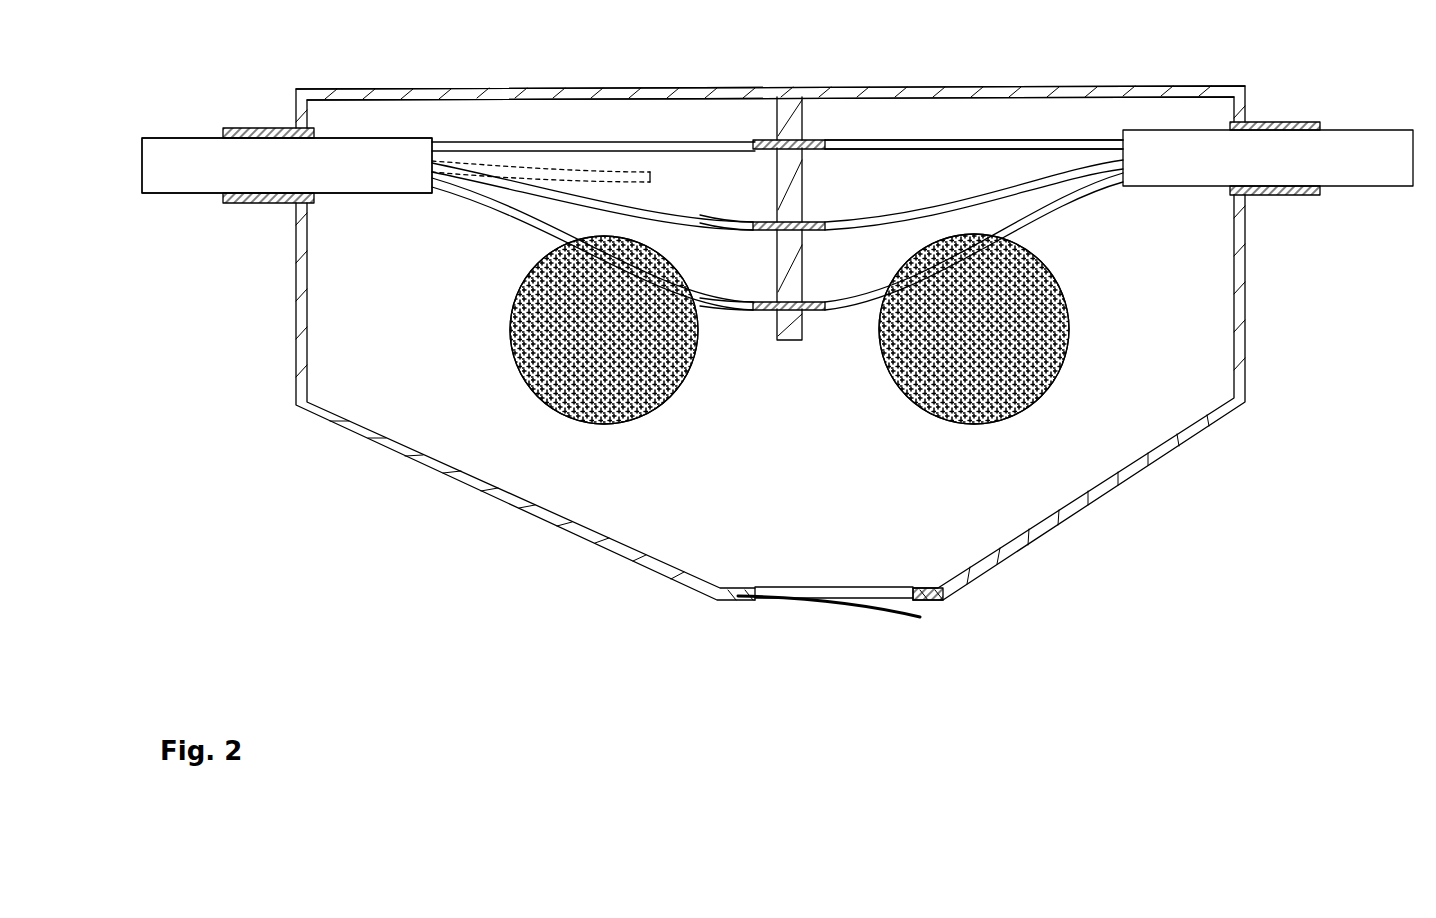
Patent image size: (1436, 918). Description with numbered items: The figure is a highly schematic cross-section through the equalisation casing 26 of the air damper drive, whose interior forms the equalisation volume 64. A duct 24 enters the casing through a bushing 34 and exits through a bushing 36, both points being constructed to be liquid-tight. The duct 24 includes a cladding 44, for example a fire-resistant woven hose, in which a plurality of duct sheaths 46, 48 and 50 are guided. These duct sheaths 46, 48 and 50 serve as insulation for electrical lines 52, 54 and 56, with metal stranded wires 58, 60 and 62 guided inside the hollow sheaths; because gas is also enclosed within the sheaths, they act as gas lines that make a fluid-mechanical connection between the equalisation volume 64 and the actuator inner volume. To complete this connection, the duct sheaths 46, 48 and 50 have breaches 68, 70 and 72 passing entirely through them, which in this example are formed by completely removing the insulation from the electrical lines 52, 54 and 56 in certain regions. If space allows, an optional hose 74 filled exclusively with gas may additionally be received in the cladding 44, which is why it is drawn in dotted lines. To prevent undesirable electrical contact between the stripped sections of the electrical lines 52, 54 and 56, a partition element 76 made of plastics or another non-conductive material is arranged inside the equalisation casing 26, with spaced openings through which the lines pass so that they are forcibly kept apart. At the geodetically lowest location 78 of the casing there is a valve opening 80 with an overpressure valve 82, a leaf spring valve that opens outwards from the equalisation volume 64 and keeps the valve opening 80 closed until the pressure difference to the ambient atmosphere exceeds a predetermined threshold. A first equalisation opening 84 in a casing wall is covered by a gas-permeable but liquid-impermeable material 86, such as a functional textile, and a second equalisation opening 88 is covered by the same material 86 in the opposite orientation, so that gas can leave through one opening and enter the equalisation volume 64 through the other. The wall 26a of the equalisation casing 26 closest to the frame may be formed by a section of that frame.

The duct 24 is at (170, 116).
The equalisation casing 26 is at (516, 548).
The wall of the equalisation casing 26a is at (538, 92).
The bushing 34 is at (249, 128).
The bushing 36 is at (1280, 122).
The cladding 44 is at (180, 183).
The duct sheath 46 is at (500, 210).
The duct sheath 48 is at (677, 220).
The duct sheath 50 is at (651, 146).
The electrical line 52 is at (722, 322).
The electrical line 54 is at (734, 236).
The electrical line 56 is at (692, 158).
The metal stranded wire 58 is at (812, 312).
The metal stranded wire 60 is at (812, 234).
The metal stranded wire 62 is at (812, 150).
The equalisation volume 64 is at (400, 368).
The breach 68 is at (762, 316).
The breach 70 is at (762, 236).
The breach 72 is at (766, 137).
The hose 74 is at (650, 172).
The partition element 76 is at (790, 340).
The location 78 is at (906, 580).
The valve opening 80 is at (838, 584).
The overpressure valve 82 is at (878, 622).
The first equalisation opening 84 is at (934, 427).
The gas-permeable but liquid-impermeable material 86 is at (560, 382).
The second equalisation opening 88 is at (608, 428).